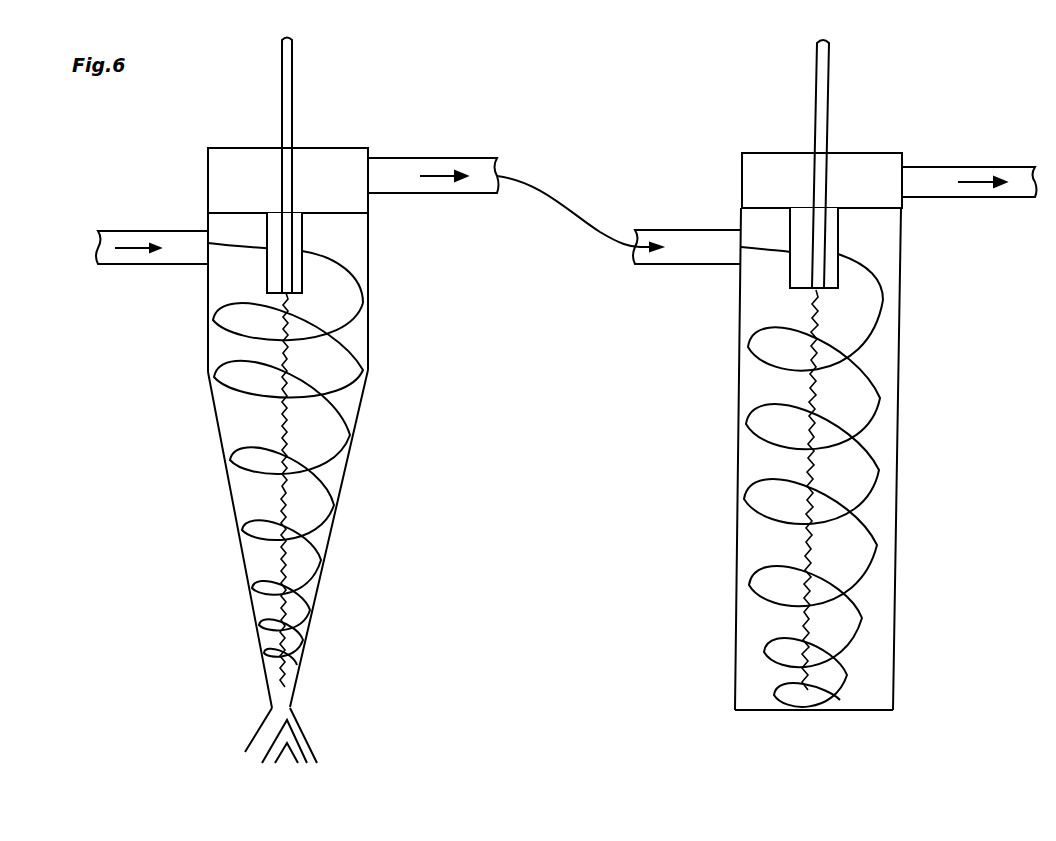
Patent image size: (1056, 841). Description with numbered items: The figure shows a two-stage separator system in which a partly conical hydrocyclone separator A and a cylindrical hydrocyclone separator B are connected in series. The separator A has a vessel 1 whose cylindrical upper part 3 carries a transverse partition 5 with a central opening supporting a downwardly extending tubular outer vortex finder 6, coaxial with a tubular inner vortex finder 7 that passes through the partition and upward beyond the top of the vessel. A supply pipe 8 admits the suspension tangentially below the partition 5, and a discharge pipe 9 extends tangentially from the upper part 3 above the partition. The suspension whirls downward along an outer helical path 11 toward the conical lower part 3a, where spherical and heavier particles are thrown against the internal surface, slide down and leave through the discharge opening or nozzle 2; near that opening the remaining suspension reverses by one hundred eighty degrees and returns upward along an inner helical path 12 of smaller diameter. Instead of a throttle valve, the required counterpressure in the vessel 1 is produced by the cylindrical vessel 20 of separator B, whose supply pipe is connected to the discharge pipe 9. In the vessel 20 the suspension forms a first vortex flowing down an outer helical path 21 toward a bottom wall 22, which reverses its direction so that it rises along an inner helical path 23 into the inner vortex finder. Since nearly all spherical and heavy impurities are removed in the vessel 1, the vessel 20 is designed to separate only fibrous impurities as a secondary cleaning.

The vessel 1 is at (347, 488).
The discharge opening or nozzle 2 is at (294, 708).
The upper part 3 is at (369, 270).
The conical lower part 3a is at (328, 560).
The transverse partition 5 is at (288, 199).
The tubular outer vortex finder 6 is at (295, 253).
The tubular inner vortex finder 7 is at (297, 165).
The supply pipe 8 is at (152, 260).
The discharge pipe 9 is at (433, 162).
The helical path 11 is at (362, 345).
The inner helical path 12 is at (294, 437).
The separator A is at (212, 516).
The cylindrical vessel 20 is at (901, 323).
The outer helical path 21 is at (882, 376).
The bottom wall 22 is at (762, 712).
The inner helical path 23 is at (808, 392).
The separator B is at (905, 453).